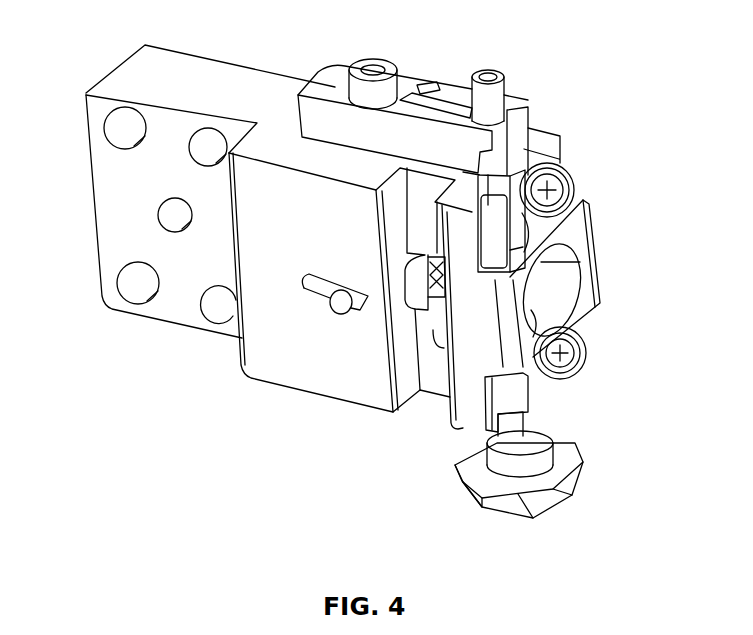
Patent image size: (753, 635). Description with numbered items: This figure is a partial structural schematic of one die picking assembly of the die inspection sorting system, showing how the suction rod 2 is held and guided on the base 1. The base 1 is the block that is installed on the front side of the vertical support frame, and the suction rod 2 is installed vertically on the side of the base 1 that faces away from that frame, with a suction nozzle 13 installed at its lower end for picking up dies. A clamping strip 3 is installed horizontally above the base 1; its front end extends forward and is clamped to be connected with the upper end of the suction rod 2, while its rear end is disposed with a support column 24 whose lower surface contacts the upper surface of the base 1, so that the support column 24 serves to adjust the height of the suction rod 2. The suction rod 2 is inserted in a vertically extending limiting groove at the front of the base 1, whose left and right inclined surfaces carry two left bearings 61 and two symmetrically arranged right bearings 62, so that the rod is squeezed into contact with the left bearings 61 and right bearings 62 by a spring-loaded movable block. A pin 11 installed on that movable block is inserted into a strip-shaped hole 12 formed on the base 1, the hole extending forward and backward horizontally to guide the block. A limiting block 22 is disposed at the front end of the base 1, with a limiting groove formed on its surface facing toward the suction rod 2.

The base 1 is at (142, 160).
The pin 11 is at (340, 310).
The strip-shaped hole 12 is at (313, 288).
The suction nozzle 13 is at (512, 512).
The suction rod 2 is at (520, 430).
The limiting block 22 is at (585, 300).
The support column 24 is at (372, 87).
The clamping strip 3 is at (470, 147).
The left bearings 61 is at (510, 395).
The right bearings 62 is at (573, 175).